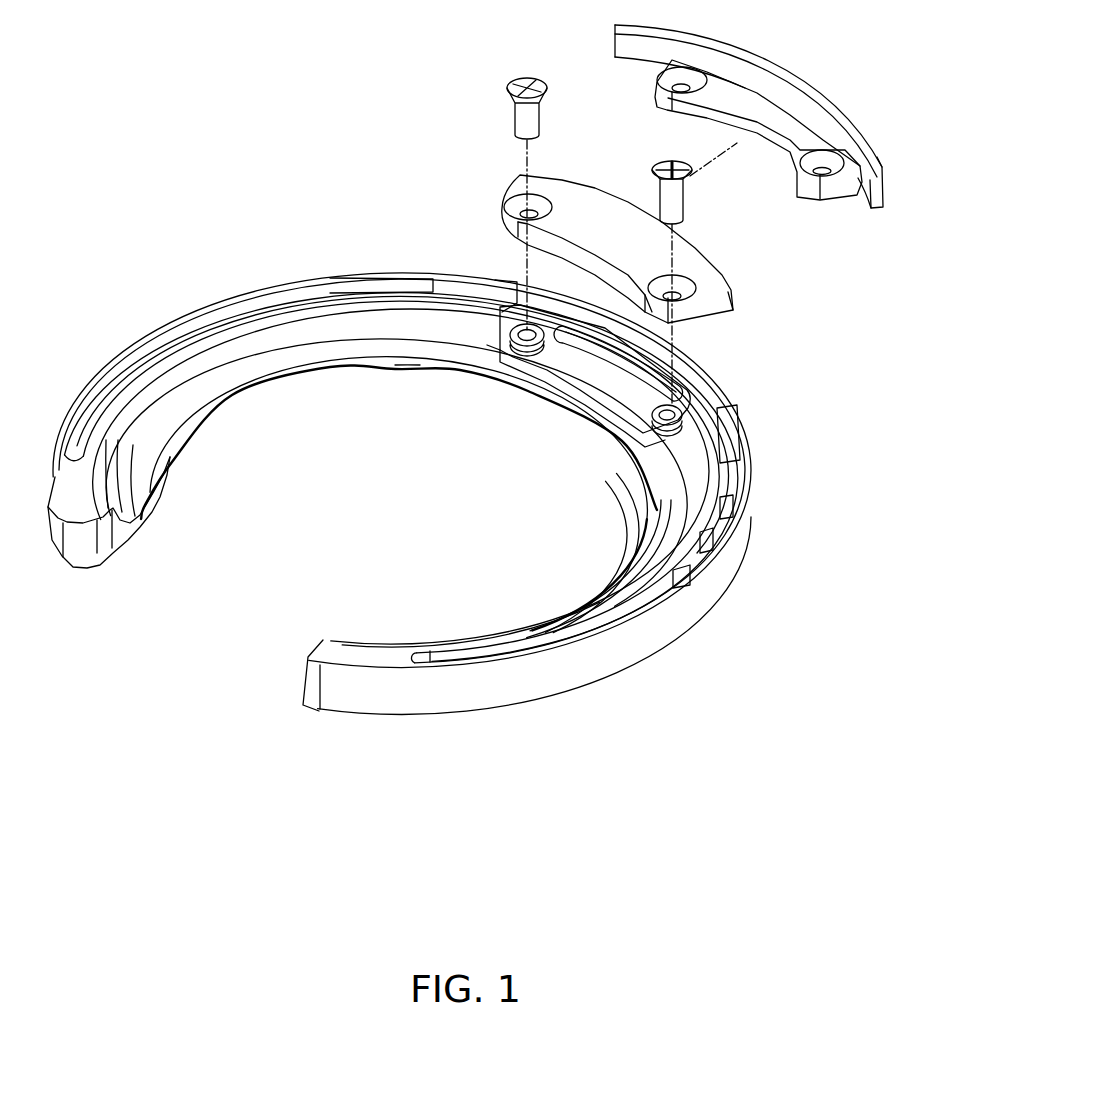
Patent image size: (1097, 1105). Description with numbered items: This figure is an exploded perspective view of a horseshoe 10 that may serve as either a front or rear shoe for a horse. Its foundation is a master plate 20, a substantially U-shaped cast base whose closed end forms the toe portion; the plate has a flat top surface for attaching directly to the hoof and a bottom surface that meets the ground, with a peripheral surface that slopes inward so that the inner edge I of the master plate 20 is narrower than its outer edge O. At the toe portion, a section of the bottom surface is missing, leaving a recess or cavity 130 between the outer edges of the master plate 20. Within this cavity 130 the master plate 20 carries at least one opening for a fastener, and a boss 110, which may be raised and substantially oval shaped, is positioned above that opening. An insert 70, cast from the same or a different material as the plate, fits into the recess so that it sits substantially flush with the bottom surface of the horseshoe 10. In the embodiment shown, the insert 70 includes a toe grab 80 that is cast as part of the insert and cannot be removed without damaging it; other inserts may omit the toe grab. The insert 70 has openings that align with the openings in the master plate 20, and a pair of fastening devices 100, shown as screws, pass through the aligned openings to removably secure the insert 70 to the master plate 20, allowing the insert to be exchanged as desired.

The horseshoe 10 is at (345, 157).
The master plate 20 is at (200, 372).
The insert 70 is at (835, 200).
The toe grab 80 is at (615, 40).
The fastening devices 100 is at (515, 112).
The boss 110 is at (597, 342).
The cavity 130 is at (705, 365).
The inner edge I is at (407, 373).
The outer edge O is at (748, 447).